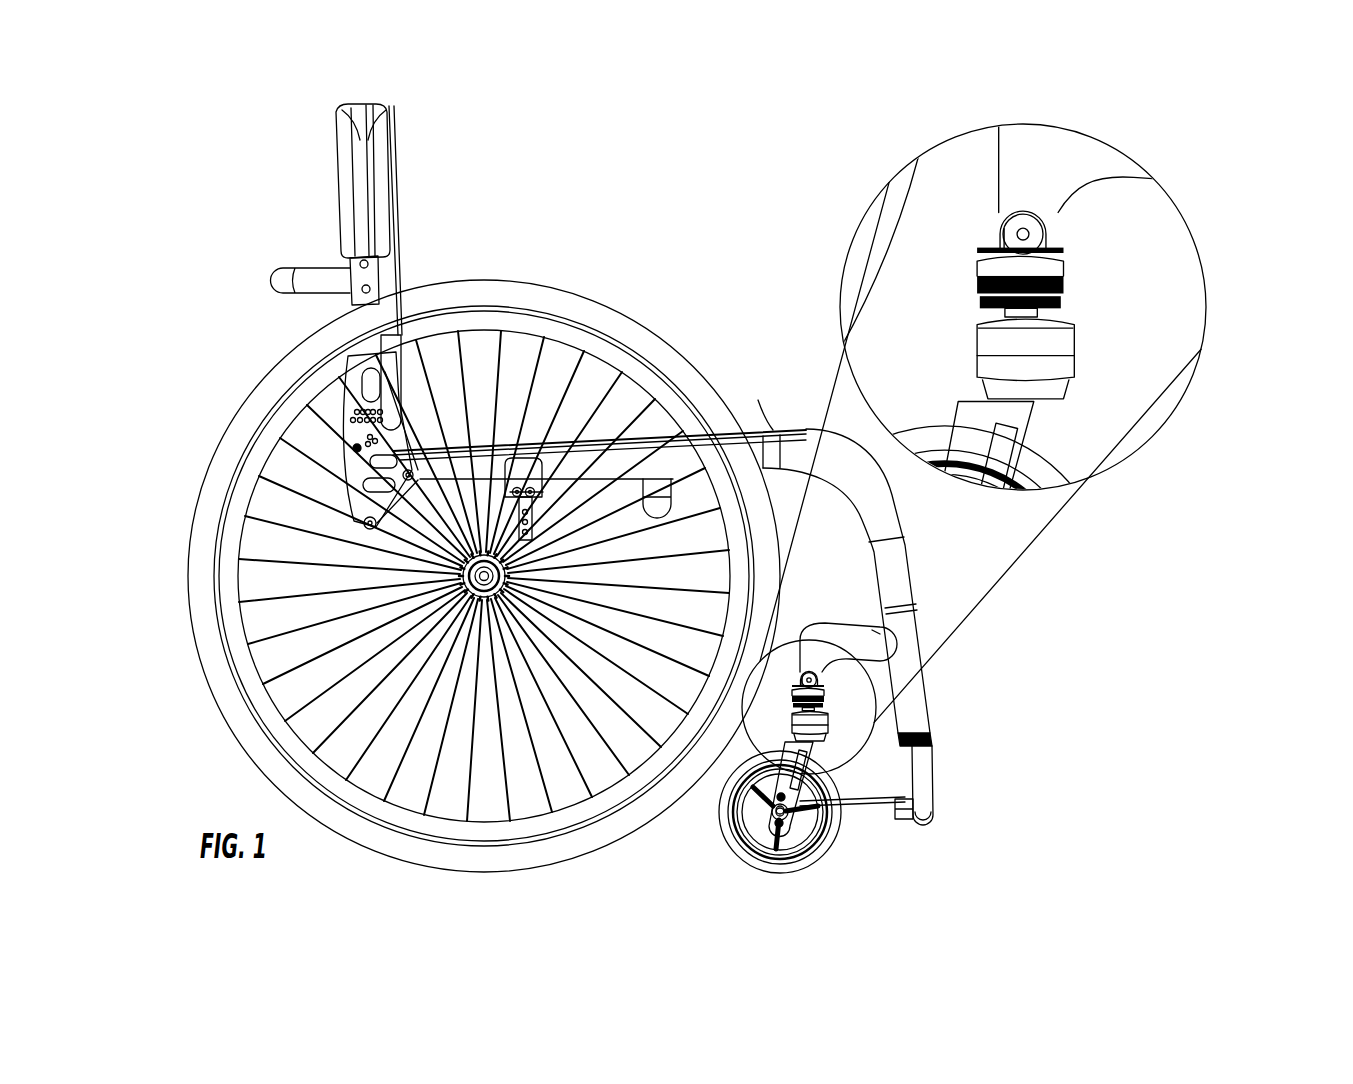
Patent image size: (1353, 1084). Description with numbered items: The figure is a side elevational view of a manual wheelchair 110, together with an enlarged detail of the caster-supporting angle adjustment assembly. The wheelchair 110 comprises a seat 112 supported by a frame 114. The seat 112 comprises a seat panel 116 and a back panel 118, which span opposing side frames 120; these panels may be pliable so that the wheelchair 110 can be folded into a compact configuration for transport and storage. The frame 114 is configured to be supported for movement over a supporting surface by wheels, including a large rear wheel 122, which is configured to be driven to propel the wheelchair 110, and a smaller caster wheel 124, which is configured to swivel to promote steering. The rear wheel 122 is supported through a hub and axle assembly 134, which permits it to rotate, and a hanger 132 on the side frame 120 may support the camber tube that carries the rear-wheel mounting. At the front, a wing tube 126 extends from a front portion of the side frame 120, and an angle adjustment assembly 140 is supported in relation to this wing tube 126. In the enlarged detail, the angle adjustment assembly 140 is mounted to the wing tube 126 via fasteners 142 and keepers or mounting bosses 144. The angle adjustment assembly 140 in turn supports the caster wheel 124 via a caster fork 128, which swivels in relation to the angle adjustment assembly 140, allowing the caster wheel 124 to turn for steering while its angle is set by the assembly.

The manual wheelchair 110 is at (701, 240).
The seat 112 is at (519, 233).
The frame 114 is at (979, 559).
The seat panel 116 is at (760, 431).
The back panel 118 is at (390, 201).
The side frame 120 is at (900, 526).
The rear wheel 122 is at (656, 332).
The caster wheel 124 is at (722, 838).
The wing tube 126 is at (873, 640).
The caster fork 128 is at (921, 756).
The hanger 132 is at (548, 545).
The hub and axle assembly 134 is at (450, 606).
The angle adjustment assembly 140 is at (846, 711).
The fastener 142 is at (1035, 238).
The mounting boss 144 is at (1048, 210).